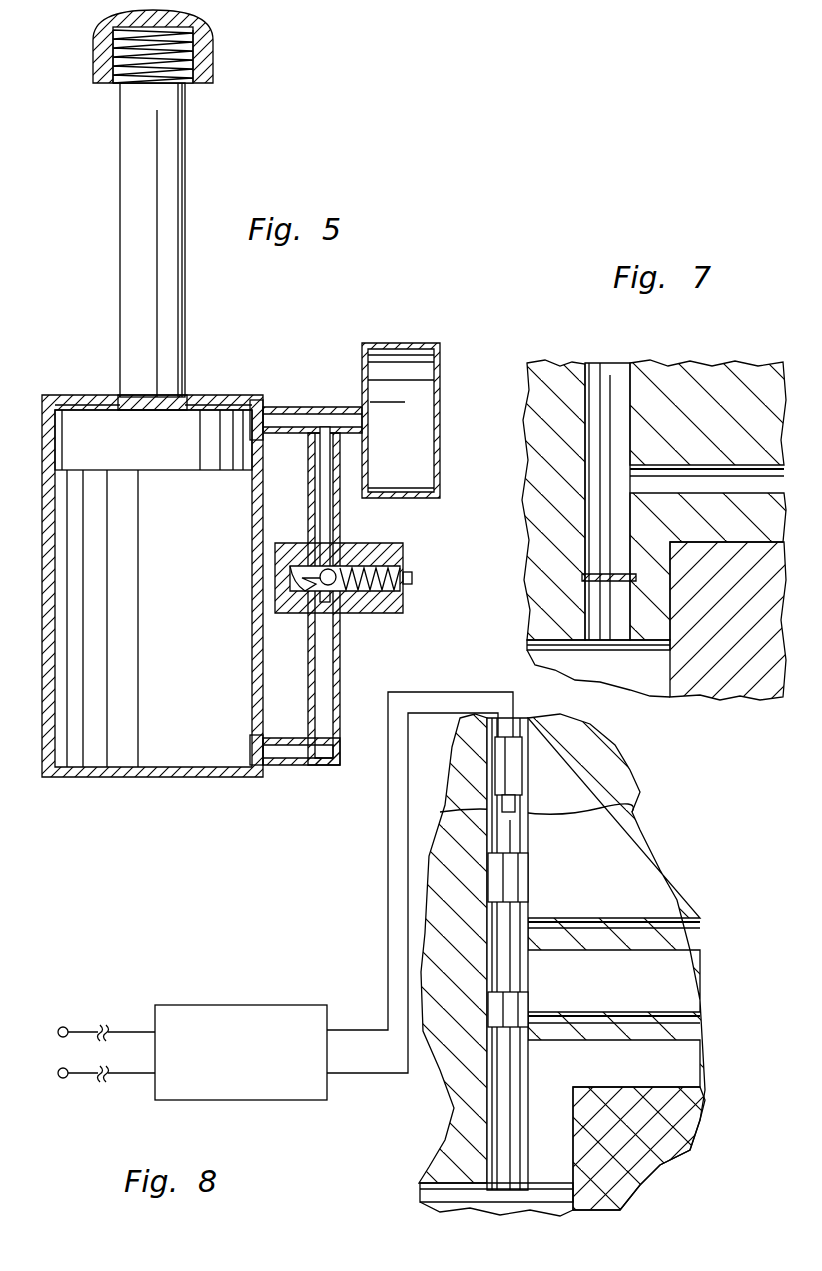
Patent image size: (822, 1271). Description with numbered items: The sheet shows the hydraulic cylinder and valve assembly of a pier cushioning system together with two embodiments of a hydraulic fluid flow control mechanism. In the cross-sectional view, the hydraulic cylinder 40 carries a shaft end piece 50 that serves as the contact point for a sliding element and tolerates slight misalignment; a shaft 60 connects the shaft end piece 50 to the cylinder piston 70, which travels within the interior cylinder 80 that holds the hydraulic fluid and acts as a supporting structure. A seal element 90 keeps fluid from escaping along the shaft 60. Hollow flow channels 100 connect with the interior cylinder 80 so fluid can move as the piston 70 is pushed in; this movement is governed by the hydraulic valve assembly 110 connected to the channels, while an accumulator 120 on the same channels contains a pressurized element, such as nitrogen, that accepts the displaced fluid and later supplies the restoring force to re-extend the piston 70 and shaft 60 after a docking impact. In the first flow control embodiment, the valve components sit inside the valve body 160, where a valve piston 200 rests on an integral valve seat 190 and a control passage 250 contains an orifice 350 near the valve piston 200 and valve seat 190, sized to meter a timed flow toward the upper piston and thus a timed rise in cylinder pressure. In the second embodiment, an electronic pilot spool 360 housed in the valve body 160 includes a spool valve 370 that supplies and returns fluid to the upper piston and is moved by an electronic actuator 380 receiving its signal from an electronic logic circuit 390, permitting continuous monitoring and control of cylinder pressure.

In FIG. 5, the hydraulic cylinder 40 is at (78, 350).
In FIG. 5, the shaft end piece 50 is at (215, 55).
In FIG. 5, the shaft 60 is at (186, 187).
In FIG. 5, the cylinder piston 70 is at (180, 464).
In FIG. 5, the interior cylinder 80 is at (58, 598).
In FIG. 5, the seal element 90 is at (195, 392).
In FIG. 5, the hollow flow channels 100 is at (296, 425).
In FIG. 5, the hydraulic valve assembly 110 is at (405, 569).
In FIG. 5, the accumulator 120 is at (440, 352).
In FIG. 7, the valve body 160 is at (648, 363).
In FIG. 8, the valve body 160 is at (510, 1102).
In FIG. 7, the valve seat 190 is at (700, 650).
In FIG. 8, the valve seat 190 is at (548, 1183).
In FIG. 7, the valve piston 200 is at (748, 672).
In FIG. 8, the valve piston 200 is at (655, 1145).
In FIG. 7, the control passage 250 is at (618, 413).
In FIG. 8, the control passage 250 is at (560, 1035).
In FIG. 7, the orifice 350 is at (620, 581).
In FIG. 8, the electronic pilot spool 360 is at (370, 933).
In FIG. 8, the spool valve 370 is at (495, 880).
In FIG. 8, the electronic actuator 380 is at (513, 718).
In FIG. 8, the electronic logic circuit 390 is at (280, 1008).